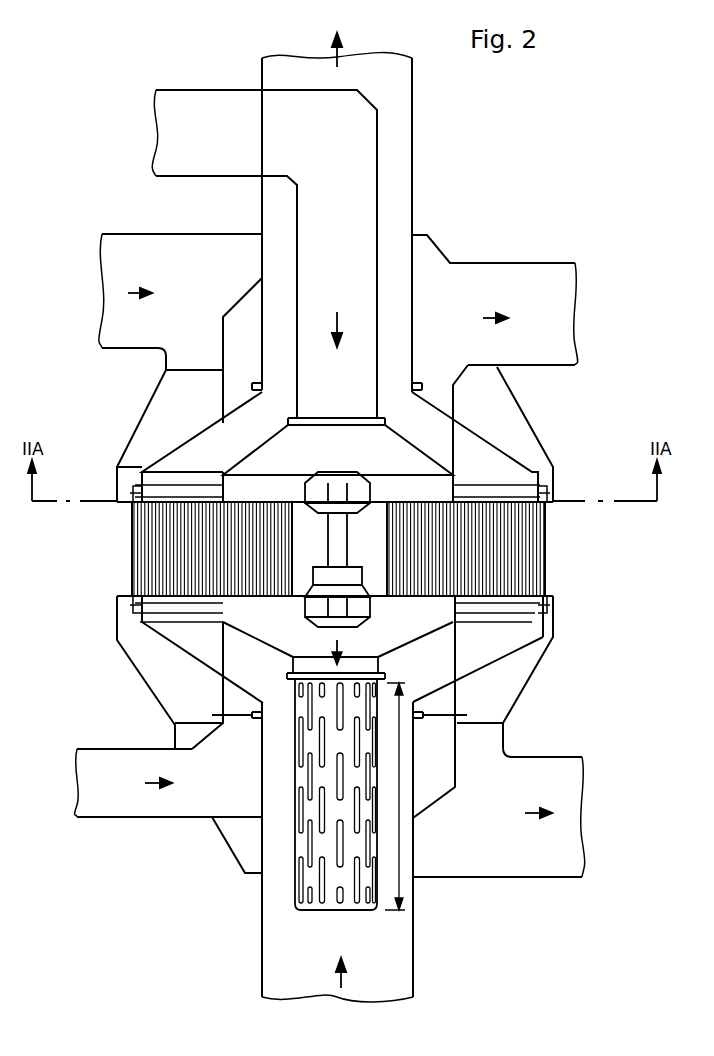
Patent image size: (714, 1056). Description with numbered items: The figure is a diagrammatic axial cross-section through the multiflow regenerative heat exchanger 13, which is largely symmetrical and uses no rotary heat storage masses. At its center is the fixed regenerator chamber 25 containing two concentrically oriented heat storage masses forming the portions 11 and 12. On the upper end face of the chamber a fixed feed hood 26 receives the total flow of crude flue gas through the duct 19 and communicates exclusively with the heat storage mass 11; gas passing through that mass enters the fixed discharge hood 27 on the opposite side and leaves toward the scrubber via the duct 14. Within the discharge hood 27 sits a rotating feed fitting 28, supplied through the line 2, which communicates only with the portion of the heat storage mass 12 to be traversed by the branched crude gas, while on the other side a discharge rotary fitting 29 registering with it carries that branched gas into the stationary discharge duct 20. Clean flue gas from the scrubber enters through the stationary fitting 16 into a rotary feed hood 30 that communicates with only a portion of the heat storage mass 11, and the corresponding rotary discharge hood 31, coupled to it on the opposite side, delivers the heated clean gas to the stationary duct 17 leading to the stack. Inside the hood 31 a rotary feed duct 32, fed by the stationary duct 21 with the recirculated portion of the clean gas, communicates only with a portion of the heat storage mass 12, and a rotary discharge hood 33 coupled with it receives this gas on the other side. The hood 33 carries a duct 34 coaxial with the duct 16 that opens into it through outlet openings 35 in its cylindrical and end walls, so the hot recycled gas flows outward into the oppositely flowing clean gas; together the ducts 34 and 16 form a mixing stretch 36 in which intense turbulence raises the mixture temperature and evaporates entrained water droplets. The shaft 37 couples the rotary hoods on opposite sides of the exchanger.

The line 2 is at (125, 803).
The heat storage mass 11 is at (178, 572).
The heat storage mass 12 is at (245, 537).
The multiflow regenerative heat exchanger 13 is at (578, 488).
The duct 14 is at (560, 773).
The stationary fitting 16 is at (400, 930).
The stationary duct 17 is at (400, 118).
The duct 19 is at (145, 242).
The stationary discharge duct 20 is at (508, 273).
The stationary duct 21 is at (370, 177).
The fixed regenerator chamber 25 is at (563, 582).
The fixed feed hood 26 is at (148, 418).
The fixed discharge hood 27 is at (148, 668).
The rotating feed fitting 28 is at (205, 692).
The discharge rotary fitting 29 is at (455, 405).
The rotary feed hood 30 is at (412, 633).
The rotary discharge hood 31 is at (472, 433).
The rotary feed duct 32 is at (425, 458).
The rotary discharge hood 33 is at (498, 642).
The duct 34 is at (295, 878).
The outlet openings 35 is at (357, 900).
The mixing stretch 36 is at (401, 828).
The shaft 37 is at (340, 545).